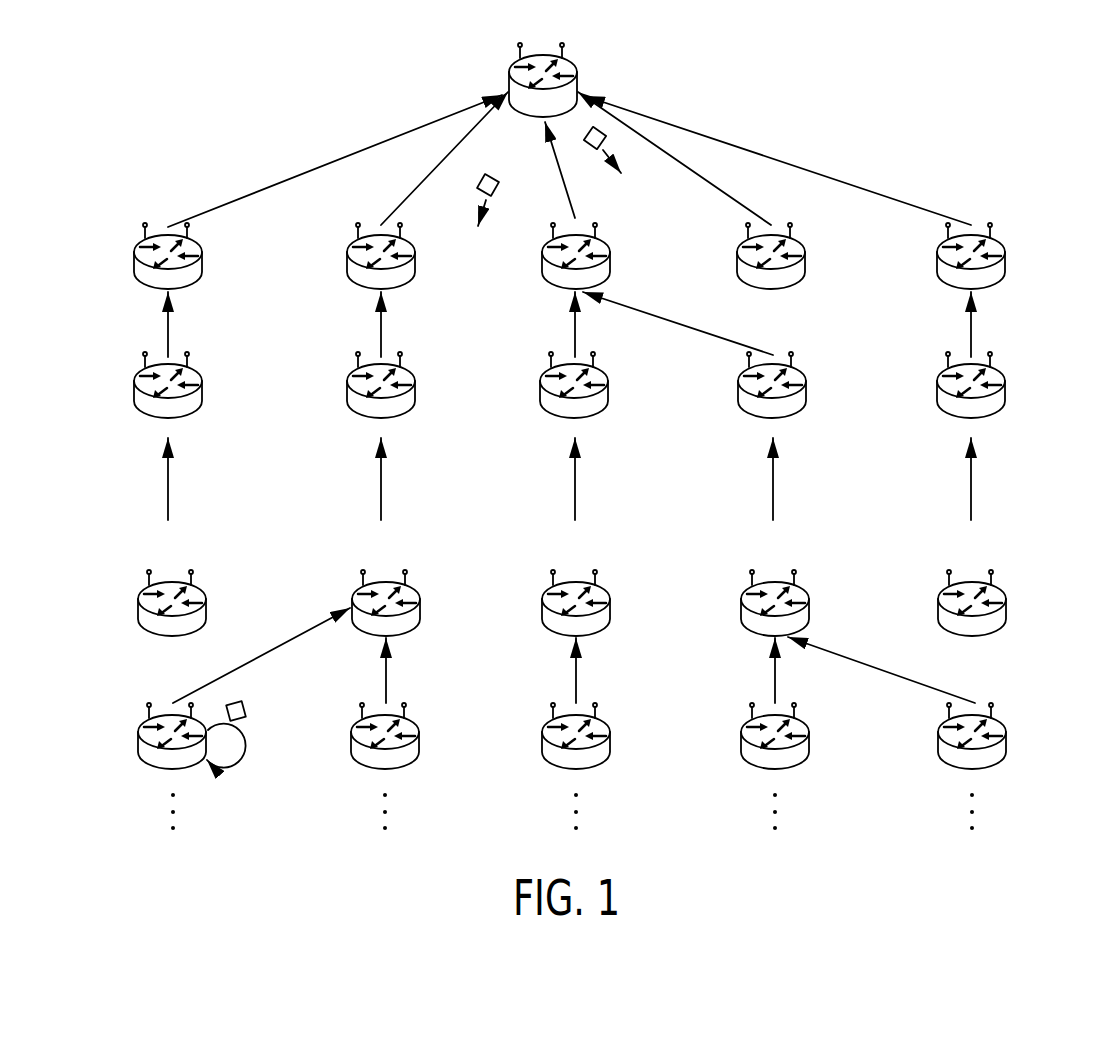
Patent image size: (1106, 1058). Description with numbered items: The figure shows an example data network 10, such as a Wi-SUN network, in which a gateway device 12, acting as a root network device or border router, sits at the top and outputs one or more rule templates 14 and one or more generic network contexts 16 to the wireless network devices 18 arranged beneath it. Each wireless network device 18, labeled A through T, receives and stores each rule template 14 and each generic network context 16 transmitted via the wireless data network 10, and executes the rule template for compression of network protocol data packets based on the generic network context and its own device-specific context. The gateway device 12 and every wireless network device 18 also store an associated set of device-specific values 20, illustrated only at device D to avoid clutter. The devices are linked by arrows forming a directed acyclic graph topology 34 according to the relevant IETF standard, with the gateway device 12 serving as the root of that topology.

The data network 10 is at (898, 130).
The gateway device 12 is at (576, 68).
The rule template 14 is at (480, 188).
The generic network context 16 is at (592, 150).
The wireless network device 18 is at (203, 264).
The device-specific value 20 is at (244, 705).
The directed acyclic graph topology 34 is at (302, 118).